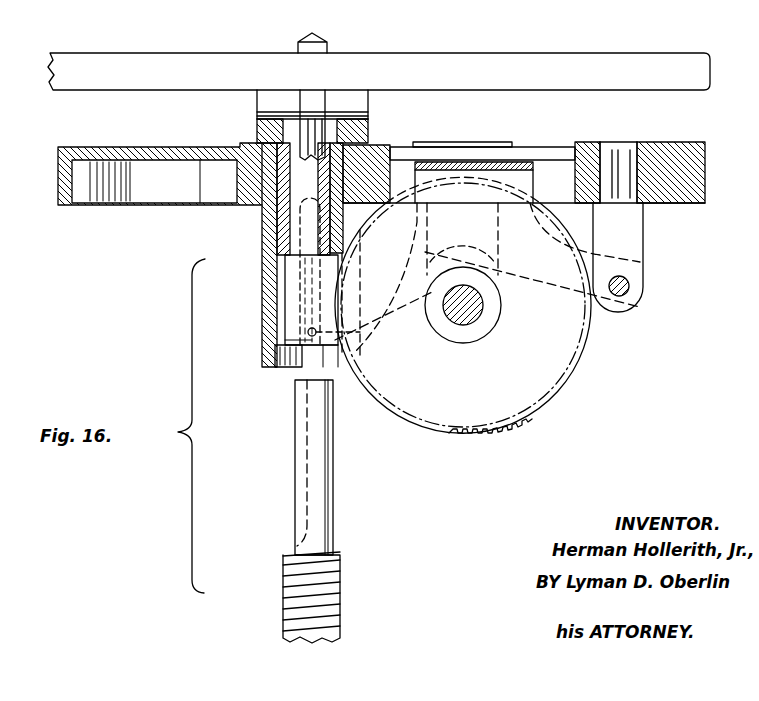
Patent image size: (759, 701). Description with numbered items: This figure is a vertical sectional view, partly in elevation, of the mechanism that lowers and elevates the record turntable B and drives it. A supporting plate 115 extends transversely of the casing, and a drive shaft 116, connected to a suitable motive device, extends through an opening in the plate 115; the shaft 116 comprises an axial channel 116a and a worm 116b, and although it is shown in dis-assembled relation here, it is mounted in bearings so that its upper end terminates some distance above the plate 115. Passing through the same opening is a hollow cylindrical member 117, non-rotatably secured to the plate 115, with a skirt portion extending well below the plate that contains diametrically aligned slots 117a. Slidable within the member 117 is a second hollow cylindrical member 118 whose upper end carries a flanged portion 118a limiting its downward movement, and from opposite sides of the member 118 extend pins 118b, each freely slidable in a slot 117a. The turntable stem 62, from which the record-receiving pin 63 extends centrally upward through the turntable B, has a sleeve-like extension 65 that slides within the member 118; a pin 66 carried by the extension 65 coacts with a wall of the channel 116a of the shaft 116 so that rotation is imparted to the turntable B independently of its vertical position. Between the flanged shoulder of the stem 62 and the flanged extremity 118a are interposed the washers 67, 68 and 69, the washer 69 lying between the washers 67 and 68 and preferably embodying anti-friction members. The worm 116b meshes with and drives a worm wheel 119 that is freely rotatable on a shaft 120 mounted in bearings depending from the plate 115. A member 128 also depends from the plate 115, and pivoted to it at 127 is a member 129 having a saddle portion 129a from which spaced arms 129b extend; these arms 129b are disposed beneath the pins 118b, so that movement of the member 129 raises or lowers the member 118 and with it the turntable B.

The turntable B is at (640, 54).
The record-receiving pin 63 is at (329, 50).
The turntable stem 62 is at (257, 100).
The washer 67 is at (372, 112).
The washer 69 is at (372, 118).
The washer 68 is at (257, 124).
The sleeve-like extension 65 is at (330, 130).
The supporting plate 115 is at (705, 200).
The flanged portion 118a is at (398, 134).
The saddle portion 129a is at (490, 160).
The pivoted member 129 is at (540, 174).
The hollow cylindrical member 117 is at (265, 228).
The second hollow cylindrical member 118 is at (283, 250).
The pin 66 is at (296, 204).
The slots 117a is at (310, 278).
The pins 118b is at (277, 342).
The worm wheel 119 is at (562, 366).
The shaft 120 is at (473, 312).
The spaced arms 129b is at (372, 350).
The depending member 128 is at (640, 252).
The pivot 127 is at (626, 290).
The drive shaft 116 is at (333, 527).
The axial channel 116a is at (305, 458).
The worm 116b is at (345, 578).